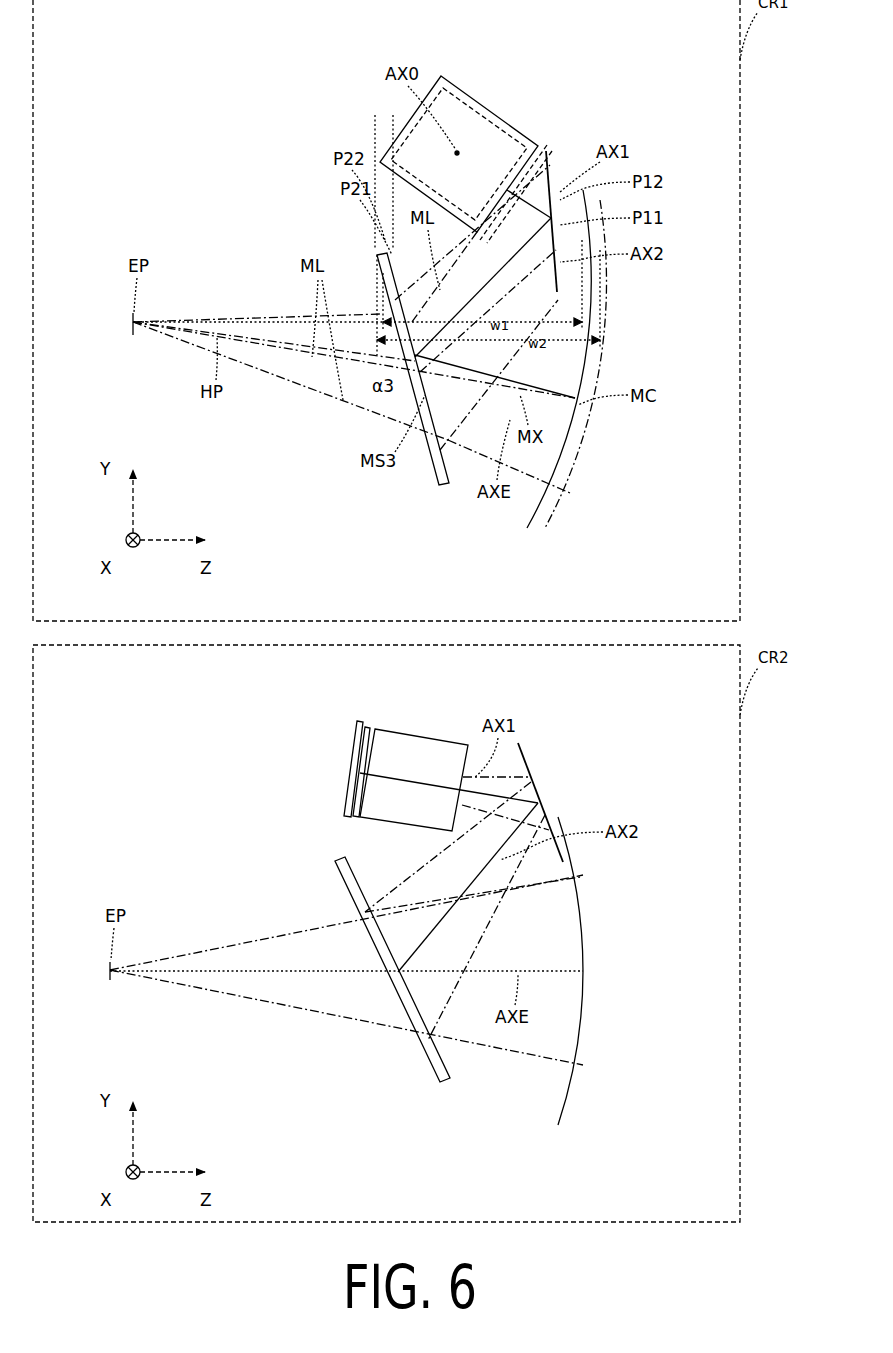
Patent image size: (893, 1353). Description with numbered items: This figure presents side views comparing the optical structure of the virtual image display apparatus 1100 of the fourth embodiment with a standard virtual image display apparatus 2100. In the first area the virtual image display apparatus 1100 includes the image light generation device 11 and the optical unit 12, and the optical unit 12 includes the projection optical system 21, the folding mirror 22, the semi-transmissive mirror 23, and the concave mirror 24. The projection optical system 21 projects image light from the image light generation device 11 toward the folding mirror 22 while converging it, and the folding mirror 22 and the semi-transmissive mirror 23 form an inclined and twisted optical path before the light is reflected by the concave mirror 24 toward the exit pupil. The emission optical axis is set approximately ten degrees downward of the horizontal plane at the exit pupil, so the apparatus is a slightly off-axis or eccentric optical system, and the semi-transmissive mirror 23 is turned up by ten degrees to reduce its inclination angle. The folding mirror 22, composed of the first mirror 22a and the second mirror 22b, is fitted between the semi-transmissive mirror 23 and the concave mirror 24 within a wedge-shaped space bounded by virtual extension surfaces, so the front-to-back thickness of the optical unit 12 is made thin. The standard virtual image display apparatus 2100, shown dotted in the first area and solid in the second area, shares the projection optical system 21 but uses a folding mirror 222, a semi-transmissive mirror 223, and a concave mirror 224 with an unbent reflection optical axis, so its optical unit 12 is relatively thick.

The image light generation device 11 is at (478, 107).
The projection optical system 21 is at (452, 92).
The folding mirror 22 is at (547, 107).
The first mirror 22a is at (498, 135).
The second mirror 22b is at (550, 170).
The semi-transmissive mirror 23 is at (380, 262).
The concave mirror 24 is at (578, 445).
The optical unit 12 is at (590, 370).
The folding mirror 222 is at (560, 272).
The semi-transmissive mirror 223 is at (443, 1085).
The concave mirror 224 is at (580, 410).
The virtual image display apparatus 1100 is at (623, 97).
The standard virtual image display apparatus 2100 is at (600, 472).